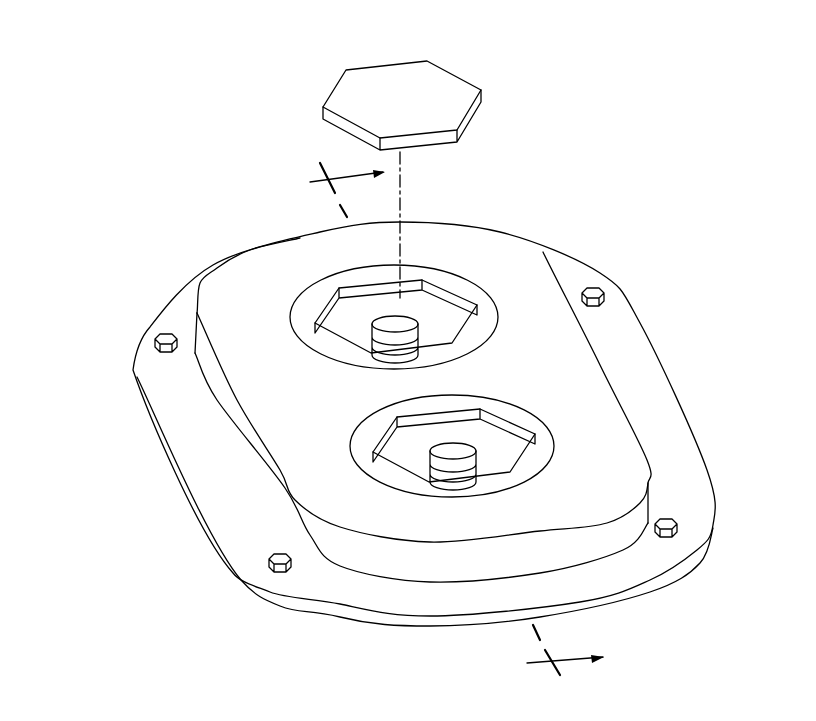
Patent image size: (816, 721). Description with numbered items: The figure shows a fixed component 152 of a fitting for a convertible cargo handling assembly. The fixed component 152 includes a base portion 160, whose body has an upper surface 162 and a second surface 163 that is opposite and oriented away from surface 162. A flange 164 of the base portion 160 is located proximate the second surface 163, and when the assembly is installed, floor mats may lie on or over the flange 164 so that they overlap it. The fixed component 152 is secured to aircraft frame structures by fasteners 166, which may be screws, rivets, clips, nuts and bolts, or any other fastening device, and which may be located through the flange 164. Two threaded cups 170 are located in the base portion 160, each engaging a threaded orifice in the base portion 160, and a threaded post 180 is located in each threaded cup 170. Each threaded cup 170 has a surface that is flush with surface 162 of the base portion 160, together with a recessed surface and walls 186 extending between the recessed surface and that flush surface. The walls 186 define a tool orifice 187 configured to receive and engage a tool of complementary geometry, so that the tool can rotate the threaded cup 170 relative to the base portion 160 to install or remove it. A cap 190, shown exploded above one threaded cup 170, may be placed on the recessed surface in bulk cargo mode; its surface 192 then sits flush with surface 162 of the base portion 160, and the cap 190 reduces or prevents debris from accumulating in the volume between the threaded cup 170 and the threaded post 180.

The fixed component 152 is at (158, 190).
The base portion 160 is at (497, 272).
The surface 162 is at (290, 380).
The second surface 163 is at (232, 571).
The flange 164 is at (192, 402).
The fasteners 166 is at (593, 287).
The threaded cup 170 is at (301, 306).
The threaded post 180 is at (381, 318).
The walls 186 is at (392, 430).
The tool orifice 187 is at (499, 428).
The cap 190 is at (375, 85).
The surface 192 is at (426, 111).